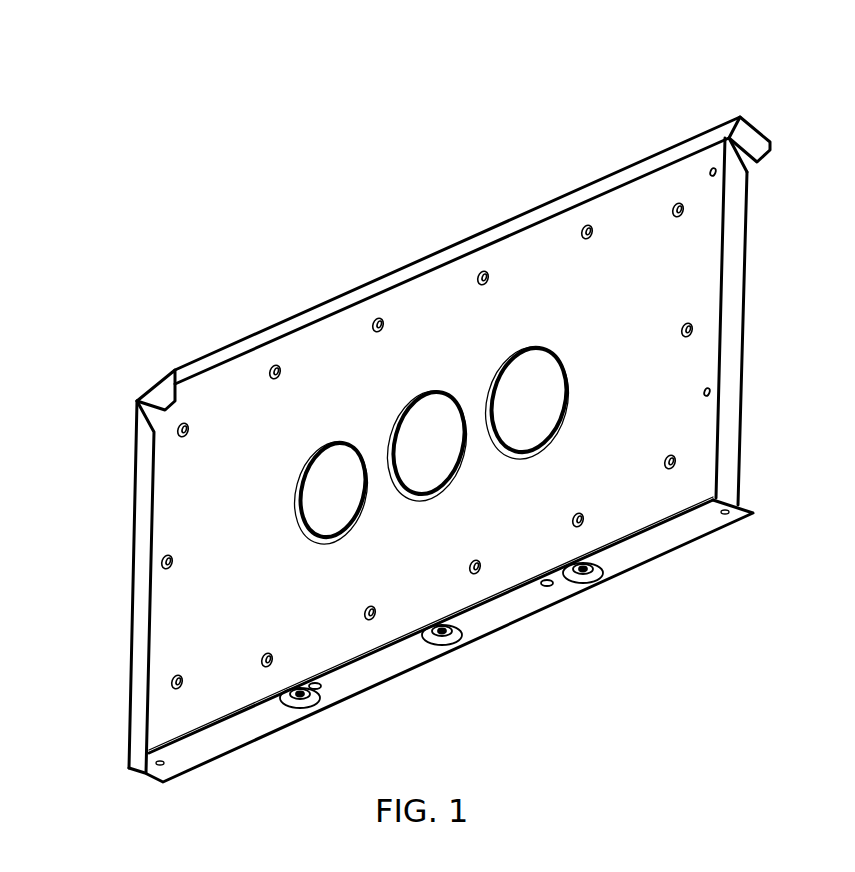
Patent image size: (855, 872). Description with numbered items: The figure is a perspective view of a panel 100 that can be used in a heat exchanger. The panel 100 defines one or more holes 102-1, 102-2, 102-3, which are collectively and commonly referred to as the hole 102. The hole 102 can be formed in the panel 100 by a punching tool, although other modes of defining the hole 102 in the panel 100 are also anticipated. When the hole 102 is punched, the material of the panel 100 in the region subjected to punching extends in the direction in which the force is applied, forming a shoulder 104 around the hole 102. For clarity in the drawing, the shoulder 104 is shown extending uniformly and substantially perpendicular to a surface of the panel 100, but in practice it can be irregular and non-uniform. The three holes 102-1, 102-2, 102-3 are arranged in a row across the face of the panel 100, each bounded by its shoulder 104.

The panel 100 is at (315, 58).
The hole 102 is at (492, 160).
The hole 102-1 is at (335, 477).
The hole 102-2 is at (435, 433).
The hole 102-3 is at (535, 387).
The shoulder 104 is at (296, 506).